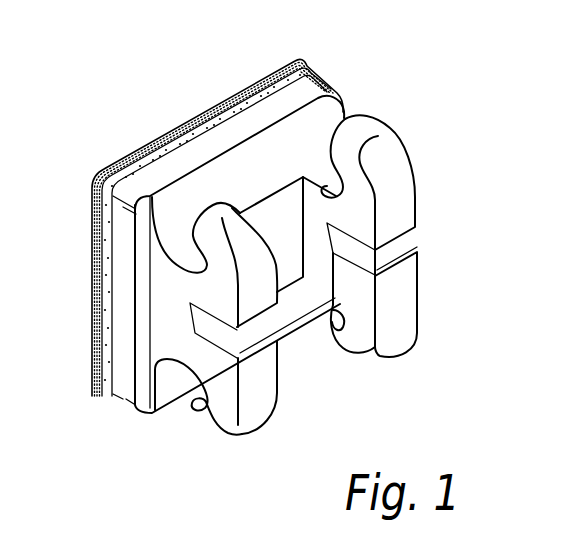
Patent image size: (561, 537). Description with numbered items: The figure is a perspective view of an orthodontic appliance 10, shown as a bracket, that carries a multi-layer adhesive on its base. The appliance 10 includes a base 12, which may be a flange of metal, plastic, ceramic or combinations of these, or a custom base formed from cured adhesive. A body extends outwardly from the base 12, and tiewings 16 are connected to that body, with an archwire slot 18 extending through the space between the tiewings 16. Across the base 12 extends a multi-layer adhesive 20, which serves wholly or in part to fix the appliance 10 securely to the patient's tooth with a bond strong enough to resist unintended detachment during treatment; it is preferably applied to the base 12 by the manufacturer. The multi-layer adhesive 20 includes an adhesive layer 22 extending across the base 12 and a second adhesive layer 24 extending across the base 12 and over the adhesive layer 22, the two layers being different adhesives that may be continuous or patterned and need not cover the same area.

The orthodontic appliance 10 is at (100, 93).
The base 12 is at (348, 104).
The tiewings 16 is at (360, 133).
The archwire slot 18 is at (388, 263).
The multi-layer adhesive 20 is at (113, 392).
The adhesive layer 22 is at (233, 90).
The adhesive layer 24 is at (265, 79).